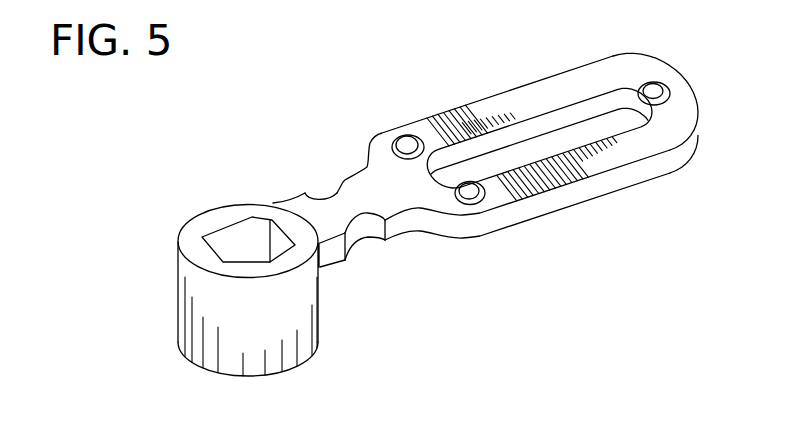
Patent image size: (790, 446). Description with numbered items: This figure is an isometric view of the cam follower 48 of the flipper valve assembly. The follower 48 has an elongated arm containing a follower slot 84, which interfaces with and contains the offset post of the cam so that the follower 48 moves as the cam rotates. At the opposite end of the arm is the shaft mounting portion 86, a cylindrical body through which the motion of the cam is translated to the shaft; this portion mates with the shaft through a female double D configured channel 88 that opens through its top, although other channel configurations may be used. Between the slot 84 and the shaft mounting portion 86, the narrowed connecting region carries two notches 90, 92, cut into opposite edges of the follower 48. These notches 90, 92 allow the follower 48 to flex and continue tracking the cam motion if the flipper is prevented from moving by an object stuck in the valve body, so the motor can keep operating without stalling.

The cam follower 48 is at (502, 108).
The follower slot 84 is at (574, 90).
The shaft mounting portion 86 is at (232, 327).
The female double D configured channel 88 is at (205, 190).
The notch 90 is at (314, 172).
The notch 92 is at (370, 270).